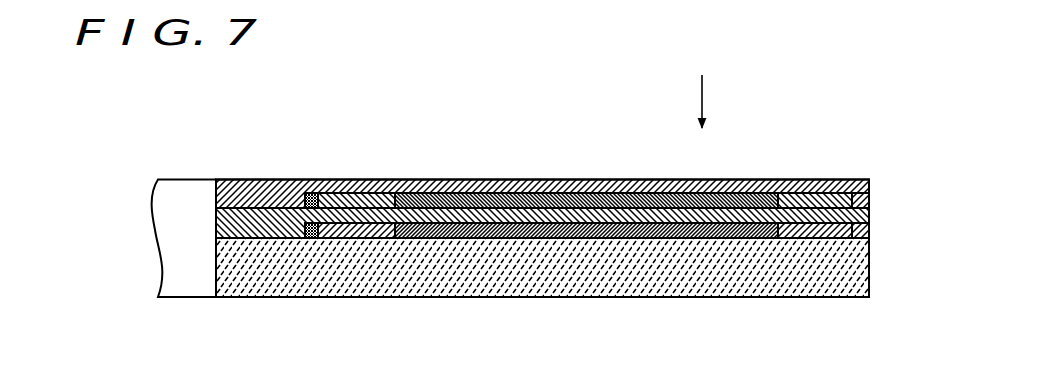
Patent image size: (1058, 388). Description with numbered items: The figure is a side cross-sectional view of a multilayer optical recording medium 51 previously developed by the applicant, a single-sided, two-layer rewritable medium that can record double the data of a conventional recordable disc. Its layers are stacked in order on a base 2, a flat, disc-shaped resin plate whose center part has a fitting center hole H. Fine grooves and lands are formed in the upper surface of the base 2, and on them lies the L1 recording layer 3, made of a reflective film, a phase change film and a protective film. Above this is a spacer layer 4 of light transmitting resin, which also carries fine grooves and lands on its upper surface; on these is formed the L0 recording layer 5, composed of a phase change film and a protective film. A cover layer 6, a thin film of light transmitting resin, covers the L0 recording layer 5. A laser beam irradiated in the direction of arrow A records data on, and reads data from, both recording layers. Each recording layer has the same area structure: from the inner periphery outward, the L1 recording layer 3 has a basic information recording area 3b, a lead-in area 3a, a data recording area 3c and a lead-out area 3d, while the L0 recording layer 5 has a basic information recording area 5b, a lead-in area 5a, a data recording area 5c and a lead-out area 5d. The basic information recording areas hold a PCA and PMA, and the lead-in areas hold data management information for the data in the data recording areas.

The multilayer optical recording medium 51 is at (553, 89).
The arrow A is at (714, 103).
The fitting center hole H is at (187, 228).
The cover layer 6 is at (869, 185).
The L0 recording layer 5 is at (616, 165).
The lead-in area 5a is at (453, 150).
The basic information recording area 5b is at (313, 215).
The data recording area 5c is at (577, 193).
The lead-out area 5d is at (817, 192).
The spacer layer 4 is at (869, 216).
The L1 recording layer 3 is at (614, 287).
The lead-in area 3a is at (359, 239).
The basic information recording area 3b is at (313, 215).
The data recording area 3c is at (584, 238).
The lead-out area 3d is at (819, 238).
The base 2 is at (840, 267).